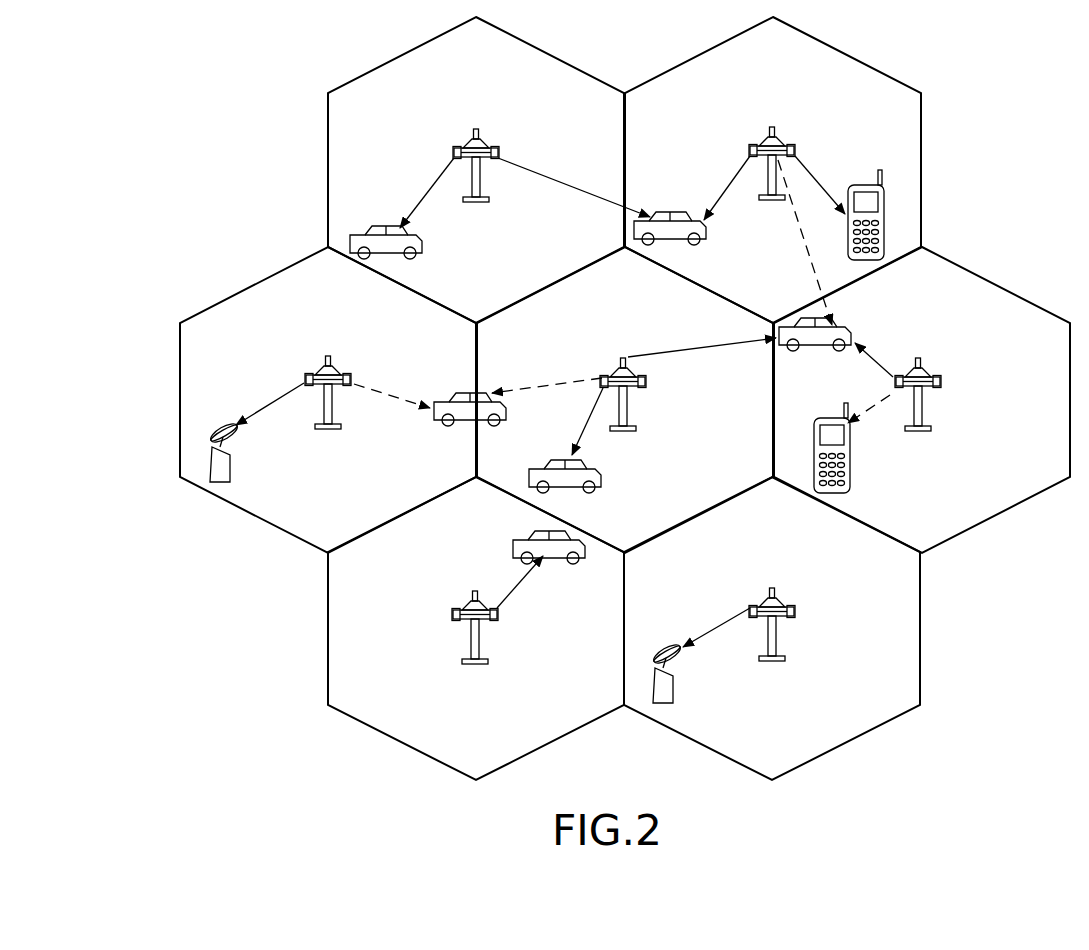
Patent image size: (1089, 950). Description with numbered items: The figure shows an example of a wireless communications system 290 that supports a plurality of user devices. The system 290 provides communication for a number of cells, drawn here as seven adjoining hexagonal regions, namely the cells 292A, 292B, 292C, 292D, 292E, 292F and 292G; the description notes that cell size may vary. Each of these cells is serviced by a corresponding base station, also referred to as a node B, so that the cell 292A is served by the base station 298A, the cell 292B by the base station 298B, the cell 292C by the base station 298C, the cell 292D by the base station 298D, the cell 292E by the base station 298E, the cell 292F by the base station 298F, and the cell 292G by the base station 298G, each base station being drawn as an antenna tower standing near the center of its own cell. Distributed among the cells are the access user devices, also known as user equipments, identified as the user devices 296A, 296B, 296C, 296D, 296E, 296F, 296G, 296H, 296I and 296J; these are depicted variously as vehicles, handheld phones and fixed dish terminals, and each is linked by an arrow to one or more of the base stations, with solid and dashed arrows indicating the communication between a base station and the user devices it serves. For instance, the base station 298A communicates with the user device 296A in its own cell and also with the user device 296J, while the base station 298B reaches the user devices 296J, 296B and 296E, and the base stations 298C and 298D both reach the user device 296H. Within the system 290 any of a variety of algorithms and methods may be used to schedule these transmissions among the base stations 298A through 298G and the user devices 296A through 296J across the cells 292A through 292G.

The wireless communications system 290 is at (112, 96).
The cell 292A is at (452, 59).
The cell 292B is at (749, 59).
The cell 292C is at (304, 299).
The cell 292D is at (596, 299).
The cell 292E is at (896, 299).
The cell 292F is at (451, 521).
The cell 292G is at (749, 521).
The base station 298A is at (476, 129).
The base station 298B is at (772, 127).
The base station 298C is at (328, 356).
The base station 298D is at (623, 358).
The base station 298E is at (918, 358).
The base station 298F is at (475, 591).
The base station 298G is at (772, 588).
The access user device 296A is at (422, 249).
The access user device 296B is at (866, 184).
The access user device 296C is at (230, 470).
The access user device 296D is at (602, 479).
The access user device 296E is at (813, 345).
The access user device 296F is at (583, 556).
The access user device 296G is at (673, 692).
The access user device 296H is at (440, 420).
The access user device 296I is at (850, 476).
The access user device 296J is at (670, 212).